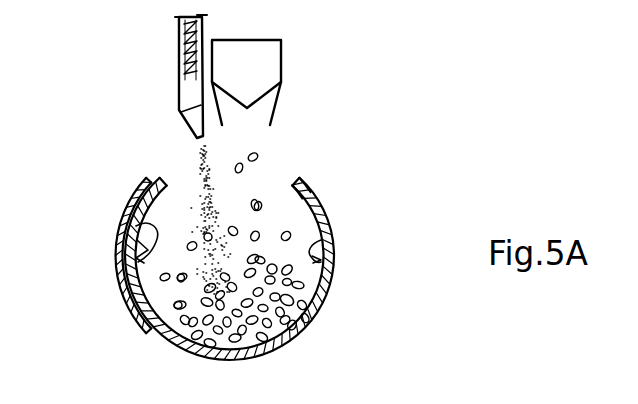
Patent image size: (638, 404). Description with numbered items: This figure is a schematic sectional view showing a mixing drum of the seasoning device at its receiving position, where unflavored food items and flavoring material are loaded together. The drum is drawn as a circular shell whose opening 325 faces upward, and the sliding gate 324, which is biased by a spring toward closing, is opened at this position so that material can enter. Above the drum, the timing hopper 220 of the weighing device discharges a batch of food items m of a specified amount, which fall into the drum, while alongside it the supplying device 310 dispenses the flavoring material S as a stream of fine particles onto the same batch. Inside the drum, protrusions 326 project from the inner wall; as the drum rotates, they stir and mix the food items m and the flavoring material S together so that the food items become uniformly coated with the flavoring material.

The supplying device 310 is at (178, 75).
The timing hopper 220 is at (268, 70).
The flavoring material S is at (210, 197).
The food items m is at (278, 246).
The sliding gate 324 is at (122, 283).
The opening 325 is at (292, 183).
The protrusions 326 is at (126, 220).